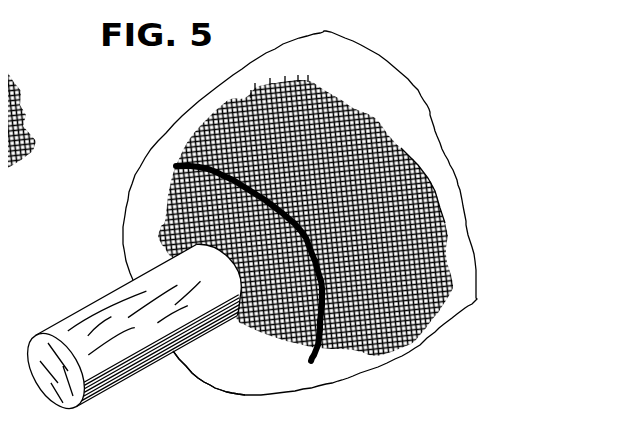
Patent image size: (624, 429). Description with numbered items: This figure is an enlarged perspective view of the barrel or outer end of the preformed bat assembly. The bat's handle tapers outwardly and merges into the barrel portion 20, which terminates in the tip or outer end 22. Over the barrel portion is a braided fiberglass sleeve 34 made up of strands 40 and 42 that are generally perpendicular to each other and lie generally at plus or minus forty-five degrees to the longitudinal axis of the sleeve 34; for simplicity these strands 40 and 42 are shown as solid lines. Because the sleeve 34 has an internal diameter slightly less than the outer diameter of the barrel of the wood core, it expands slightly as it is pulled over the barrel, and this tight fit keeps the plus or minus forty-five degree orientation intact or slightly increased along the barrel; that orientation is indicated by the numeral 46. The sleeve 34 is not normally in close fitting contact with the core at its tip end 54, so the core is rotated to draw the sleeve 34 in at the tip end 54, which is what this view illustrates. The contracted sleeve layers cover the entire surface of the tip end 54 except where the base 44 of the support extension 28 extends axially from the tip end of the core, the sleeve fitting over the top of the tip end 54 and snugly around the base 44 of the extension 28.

The barrel portion 20 is at (465, 311).
The tip or outer end 22 is at (260, 395).
The support extension 28 is at (82, 313).
The fiberglass sleeve 34 is at (22, 154).
The strand 40 is at (451, 110).
The strand 42 is at (258, 74).
The base of support extension 44 is at (160, 213).
The strand orientation 46 is at (425, 205).
The tip end 54 is at (206, 361).